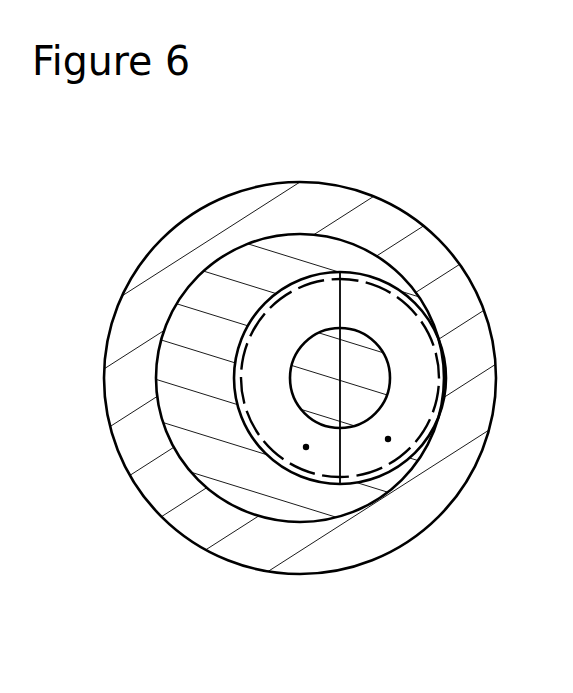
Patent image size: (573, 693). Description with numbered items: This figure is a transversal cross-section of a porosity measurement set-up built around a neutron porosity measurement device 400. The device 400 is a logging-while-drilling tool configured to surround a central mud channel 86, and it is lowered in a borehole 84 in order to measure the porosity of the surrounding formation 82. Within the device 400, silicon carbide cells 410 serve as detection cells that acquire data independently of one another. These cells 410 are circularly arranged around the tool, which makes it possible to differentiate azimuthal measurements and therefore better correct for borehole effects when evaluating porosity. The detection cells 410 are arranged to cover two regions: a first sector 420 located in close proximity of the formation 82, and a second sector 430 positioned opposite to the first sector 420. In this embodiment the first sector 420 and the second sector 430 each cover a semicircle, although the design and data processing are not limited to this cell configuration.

The formation 82 is at (300, 346).
The borehole 84 is at (300, 383).
The mud channel 86 is at (340, 380).
The neutron porosity measurement device 400 is at (340, 378).
The silicon carbide cells 410 is at (397, 288).
The first sector 420 is at (388, 439).
The second sector 430 is at (306, 447).